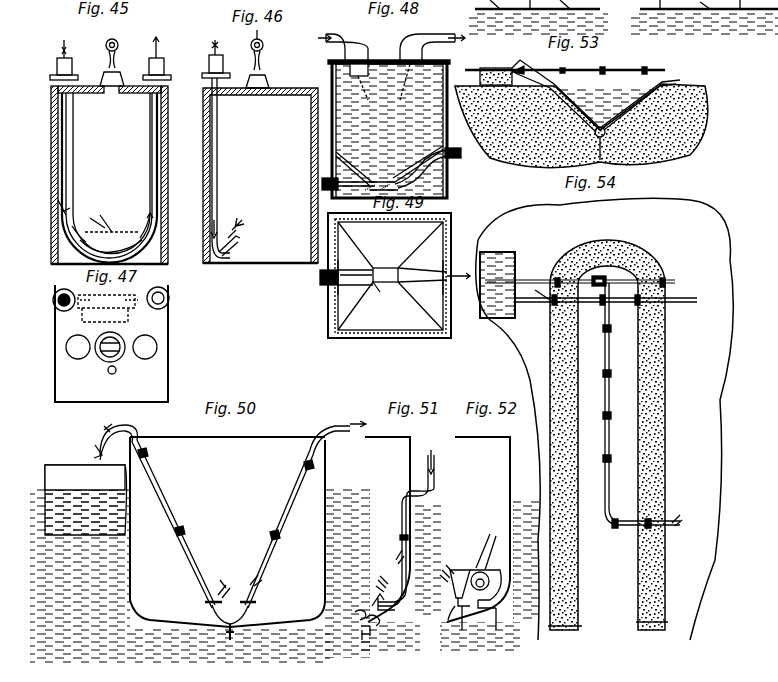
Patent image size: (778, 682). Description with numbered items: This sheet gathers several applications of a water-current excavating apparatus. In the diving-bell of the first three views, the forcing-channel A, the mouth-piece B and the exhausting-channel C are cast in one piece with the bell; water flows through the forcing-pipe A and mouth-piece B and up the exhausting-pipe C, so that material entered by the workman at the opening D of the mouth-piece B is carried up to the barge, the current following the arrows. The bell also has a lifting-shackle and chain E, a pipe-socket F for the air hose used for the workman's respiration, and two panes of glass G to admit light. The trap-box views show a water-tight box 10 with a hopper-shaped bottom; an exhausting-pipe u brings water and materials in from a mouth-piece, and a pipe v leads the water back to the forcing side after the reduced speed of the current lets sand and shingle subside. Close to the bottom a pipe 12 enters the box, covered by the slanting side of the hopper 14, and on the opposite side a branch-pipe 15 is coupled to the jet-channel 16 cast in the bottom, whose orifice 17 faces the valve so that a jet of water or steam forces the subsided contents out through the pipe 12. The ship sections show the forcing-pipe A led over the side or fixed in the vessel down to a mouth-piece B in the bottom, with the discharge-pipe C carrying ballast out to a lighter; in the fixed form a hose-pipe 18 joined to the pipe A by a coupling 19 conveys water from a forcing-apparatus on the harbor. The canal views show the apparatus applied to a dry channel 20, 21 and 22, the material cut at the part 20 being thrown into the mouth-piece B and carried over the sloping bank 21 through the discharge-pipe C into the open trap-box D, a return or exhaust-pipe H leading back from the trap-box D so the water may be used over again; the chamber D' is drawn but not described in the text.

In FIG. 45, the forcing-channel A is at (110, 126).
In FIG. 46, the forcing-channel A is at (216, 140).
In FIG. 54, the forcing-channel A is at (637, 405).
In FIG. 50, the forcing-channel A is at (230, 509).
In FIG. 51, the forcing-channel A is at (395, 556).
In FIG. 45, the mouth-piece B is at (112, 236).
In FIG. 46, the mouth-piece B is at (228, 241).
In FIG. 47, the mouth-piece B is at (109, 301).
In FIG. 53, the mouth-piece B is at (605, 151).
In FIG. 54, the mouth-piece B is at (606, 295).
In FIG. 50, the mouth-piece B is at (230, 610).
In FIG. 51, the mouth-piece B is at (389, 597).
In FIG. 52, the mouth-piece B is at (470, 597).
In FIG. 45, the exhausting-channel C is at (113, 178).
In FIG. 47, the exhausting-channel C is at (111, 293).
In FIG. 53, the exhausting-channel C is at (596, 90).
In FIG. 54, the exhausting-channel C is at (580, 277).
In FIG. 50, the exhausting-channel C is at (353, 625).
In FIG. 51, the exhausting-channel C is at (369, 621).
In FIG. 45, the opening of the mouth-piece D is at (112, 227).
In FIG. 46, the opening of the mouth-piece D is at (238, 234).
In FIG. 47, the opening of the mouth-piece D is at (106, 308).
In FIG. 49, the opening of the mouth-piece D is at (329, 268).
In FIG. 53, the opening of the mouth-piece D is at (491, 71).
In FIG. 54, the opening of the mouth-piece D is at (497, 287).
In FIG. 50, the opening of the mouth-piece D is at (86, 500).
In FIG. 49, the outlet chamber D' is at (452, 270).
In FIG. 45, the lifting-shackle and chain E is at (112, 62).
In FIG. 46, the lifting-shackle and chain E is at (252, 59).
In FIG. 47, the lifting-shackle and chain E is at (113, 347).
In FIG. 47, the pipe-socket F is at (115, 367).
In FIG. 47, the panes of glass G is at (111, 347).
In FIG. 53, the return or exhaust-pipe H is at (565, 65).
In FIG. 50, the return or exhaust-pipe H is at (200, 550).
In FIG. 51, the return or exhaust-pipe H is at (400, 544).
In FIG. 52, the return or exhaust-pipe H is at (490, 544).
In FIG. 48, the exhausting-pipe u is at (343, 67).
In FIG. 48, the return pipe v is at (432, 67).
In FIG. 48, the box 10 is at (392, 129).
In FIG. 49, the box 10 is at (389, 275).
In FIG. 48, the pipe 12 is at (329, 176).
In FIG. 48, the slanting piece or side of the hopper 14 is at (351, 169).
In FIG. 49, the slanting piece or side of the hopper 14 is at (355, 277).
In FIG. 48, the branch-pipe 15 is at (456, 150).
In FIG. 49, the branch-pipe 15 is at (434, 272).
In FIG. 48, the jet-channel 16 is at (420, 167).
In FIG. 49, the jet-channel 16 is at (393, 275).
In FIG. 48, the orifice 17 is at (381, 194).
In FIG. 49, the orifice 17 is at (381, 292).
In FIG. 51, the hose-pipe 18 is at (437, 470).
In FIG. 51, the coupling 19 is at (417, 539).
In FIG. 53, the part being cut 20 is at (593, 103).
In FIG. 54, the part being cut 20 is at (602, 275).
In FIG. 54, the sloping bank 21 is at (543, 296).
In FIG. 53, the channel 22 is at (581, 126).
In FIG. 54, the channel 22 is at (605, 419).